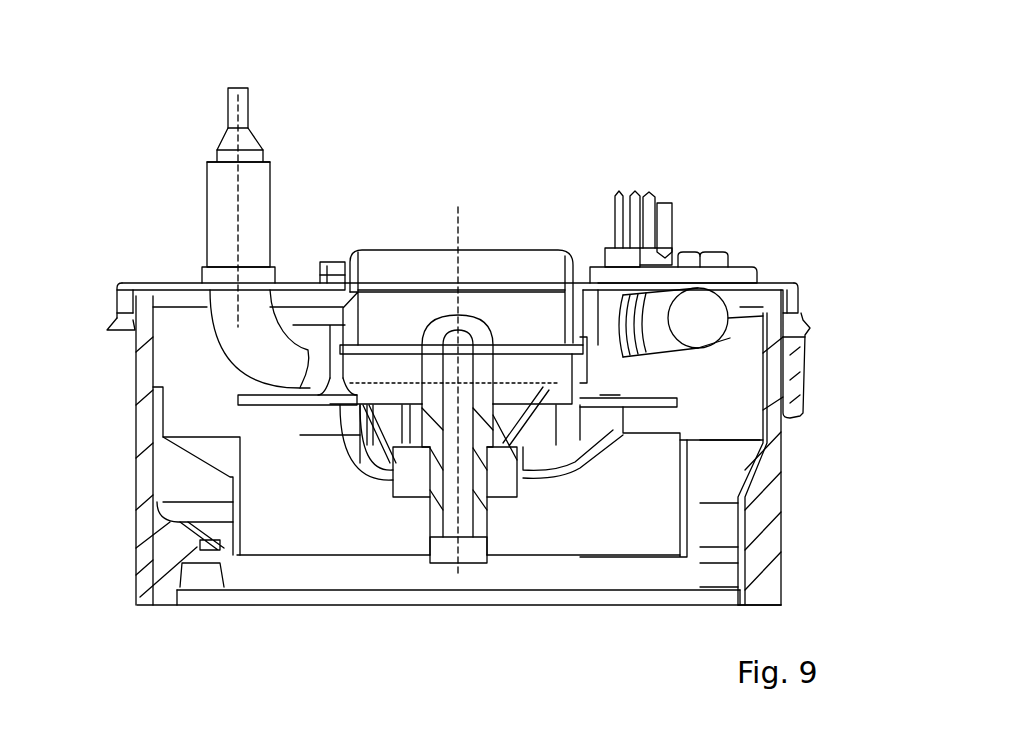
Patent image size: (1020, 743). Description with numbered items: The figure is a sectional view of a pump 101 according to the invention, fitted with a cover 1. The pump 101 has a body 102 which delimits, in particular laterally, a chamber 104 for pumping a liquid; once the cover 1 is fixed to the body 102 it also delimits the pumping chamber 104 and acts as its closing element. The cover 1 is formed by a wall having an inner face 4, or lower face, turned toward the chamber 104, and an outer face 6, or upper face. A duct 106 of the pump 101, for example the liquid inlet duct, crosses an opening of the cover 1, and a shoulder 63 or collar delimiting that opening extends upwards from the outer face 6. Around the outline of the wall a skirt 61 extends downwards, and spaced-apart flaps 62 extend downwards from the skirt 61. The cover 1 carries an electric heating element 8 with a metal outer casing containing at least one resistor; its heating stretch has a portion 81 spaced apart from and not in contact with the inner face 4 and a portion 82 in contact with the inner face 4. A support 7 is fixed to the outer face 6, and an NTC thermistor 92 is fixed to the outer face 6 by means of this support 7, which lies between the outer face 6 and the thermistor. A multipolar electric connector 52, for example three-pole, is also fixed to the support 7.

The cover 1 is at (150, 268).
The inner face 4 is at (168, 287).
The outer face 6 is at (177, 284).
The support 7 is at (750, 277).
The heating element 8 is at (217, 220).
The electric connector 52 is at (630, 192).
The skirt 61 is at (117, 310).
The flaps 62 is at (805, 368).
The shoulder 63 is at (332, 266).
The stretch of heating element spaced apart from inner face 81 is at (598, 310).
The stretch of heating element in contact with inner face 82 is at (717, 297).
The NTC thermistor 92 is at (665, 280).
The pump 101 is at (348, 100).
The body 102 is at (138, 463).
The chamber 104 is at (735, 413).
The duct 106 is at (525, 282).